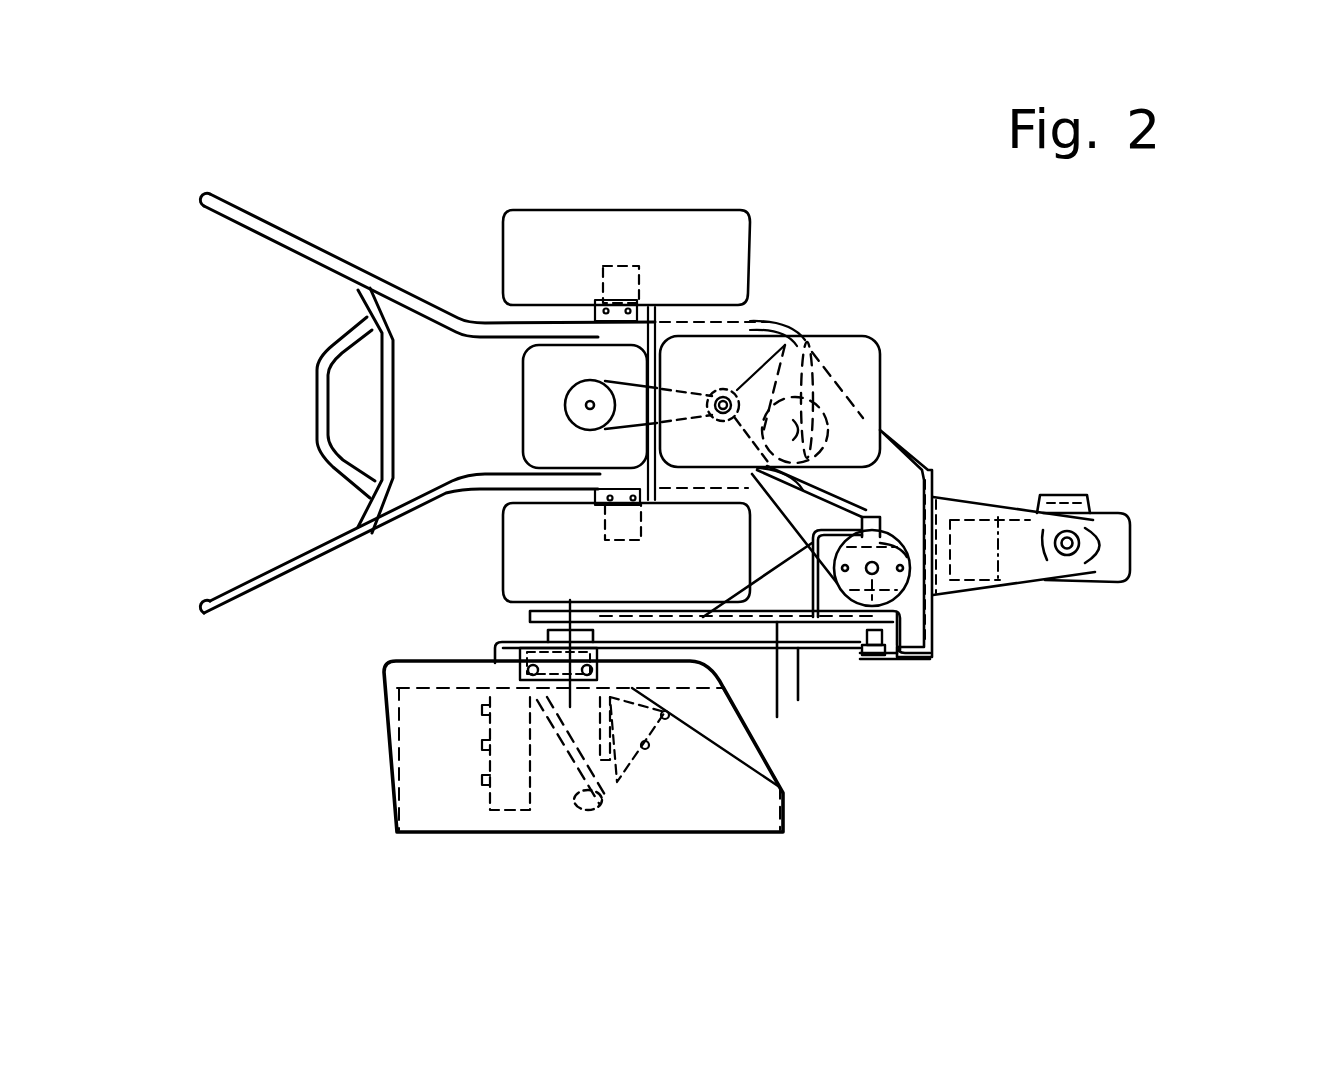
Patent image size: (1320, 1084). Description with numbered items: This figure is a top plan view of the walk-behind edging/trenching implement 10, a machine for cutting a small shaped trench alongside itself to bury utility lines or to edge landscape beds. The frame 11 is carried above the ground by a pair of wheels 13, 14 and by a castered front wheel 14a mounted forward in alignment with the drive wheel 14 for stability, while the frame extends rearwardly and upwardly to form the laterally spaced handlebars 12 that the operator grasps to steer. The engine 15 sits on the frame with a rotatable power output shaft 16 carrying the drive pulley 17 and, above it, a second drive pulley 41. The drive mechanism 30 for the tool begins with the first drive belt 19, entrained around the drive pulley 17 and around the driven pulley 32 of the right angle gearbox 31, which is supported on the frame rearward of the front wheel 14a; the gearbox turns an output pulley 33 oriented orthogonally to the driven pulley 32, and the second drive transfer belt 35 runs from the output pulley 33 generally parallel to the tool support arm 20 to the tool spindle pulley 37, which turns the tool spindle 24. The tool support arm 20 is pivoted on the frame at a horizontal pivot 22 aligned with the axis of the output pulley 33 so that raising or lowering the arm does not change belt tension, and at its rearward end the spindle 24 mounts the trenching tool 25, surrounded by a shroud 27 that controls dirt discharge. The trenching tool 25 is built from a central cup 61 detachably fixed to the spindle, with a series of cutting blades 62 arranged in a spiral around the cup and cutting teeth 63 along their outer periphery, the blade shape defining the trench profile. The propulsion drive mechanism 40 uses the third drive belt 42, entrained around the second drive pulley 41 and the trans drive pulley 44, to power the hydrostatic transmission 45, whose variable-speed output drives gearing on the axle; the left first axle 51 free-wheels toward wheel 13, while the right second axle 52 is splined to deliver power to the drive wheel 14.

The edging/trenching implement 10 is at (1068, 298).
The frame 11 is at (930, 468).
The handlebars 12 is at (225, 225).
The wheel 13 is at (752, 250).
The drive wheel 14 is at (503, 566).
The front wheel 14a is at (1132, 569).
The engine 15 is at (881, 374).
The power output shaft 16 is at (787, 345).
The drive pulley 17 is at (815, 335).
The first drive belt 19 is at (853, 497).
The tool support arm 20 is at (798, 700).
The horizontal pivot 22 is at (872, 657).
The tool spindle 24 is at (570, 710).
The trenching tool 25 is at (515, 860).
The shroud 27 is at (785, 795).
The drive mechanism 30 is at (1085, 426).
The right angle gearbox 31 is at (960, 515).
The driven pulley 32 is at (910, 590).
The output pulley 33 is at (903, 660).
The second drive transfer belt 35 is at (777, 717).
The tool spindle pulley 37 is at (548, 607).
The propulsion drive mechanism 40 is at (446, 392).
The second drive pulley 41 is at (707, 395).
The third drive belt 42 is at (677, 386).
The trans drive pulley 44 is at (565, 404).
The hydrostatic transmission 45 is at (521, 371).
The first axle 51 is at (602, 270).
The second axle 52 is at (642, 522).
The central cup 61 is at (545, 768).
The cutting blades 62 is at (498, 766).
The cutting teeth 63 is at (498, 783).